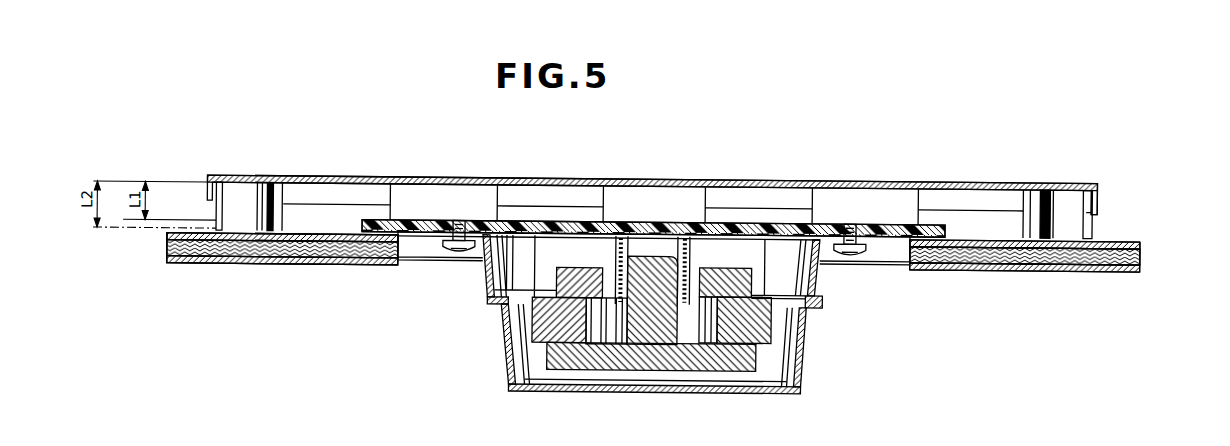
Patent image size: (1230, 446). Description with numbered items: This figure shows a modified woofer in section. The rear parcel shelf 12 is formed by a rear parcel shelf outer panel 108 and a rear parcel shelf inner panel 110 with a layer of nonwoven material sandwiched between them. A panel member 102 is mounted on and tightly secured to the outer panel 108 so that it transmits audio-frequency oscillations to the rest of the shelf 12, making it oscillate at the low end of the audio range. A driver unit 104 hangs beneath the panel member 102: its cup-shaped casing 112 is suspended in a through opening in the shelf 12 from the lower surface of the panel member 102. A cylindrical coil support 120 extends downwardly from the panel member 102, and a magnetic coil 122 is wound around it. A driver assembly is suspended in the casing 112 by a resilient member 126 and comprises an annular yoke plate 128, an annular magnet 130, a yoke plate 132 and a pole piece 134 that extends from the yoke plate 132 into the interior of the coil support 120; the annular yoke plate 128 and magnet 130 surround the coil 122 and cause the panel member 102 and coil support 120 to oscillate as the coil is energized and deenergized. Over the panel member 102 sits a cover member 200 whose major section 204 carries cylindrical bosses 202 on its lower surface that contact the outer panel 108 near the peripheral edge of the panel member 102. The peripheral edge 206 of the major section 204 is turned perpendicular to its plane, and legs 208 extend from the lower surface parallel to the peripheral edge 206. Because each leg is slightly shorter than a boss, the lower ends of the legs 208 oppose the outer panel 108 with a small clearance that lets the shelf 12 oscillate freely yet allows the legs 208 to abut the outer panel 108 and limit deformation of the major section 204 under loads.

The rear parcel shelf 12 is at (678, 273).
The panel member 102 is at (688, 215).
The driver unit 104 is at (794, 309).
The rear parcel shelf outer panel 108 is at (1140, 237).
The rear parcel shelf inner panel 110 is at (1072, 263).
The casing 112 is at (816, 296).
The coil support 120 is at (691, 240).
The magnetic coil 122 is at (618, 253).
The resilient member 126 is at (486, 277).
The annular yoke plate 128 is at (753, 273).
The annular magnet 130 is at (765, 325).
The yoke plate 132 is at (728, 362).
The pole piece 134 is at (648, 329).
The cover member 200 is at (695, 167).
The cylindrical bosses 202 is at (264, 191).
The major section 204 is at (562, 174).
The peripheral edge 206 is at (1103, 184).
The legs 208 is at (868, 198).